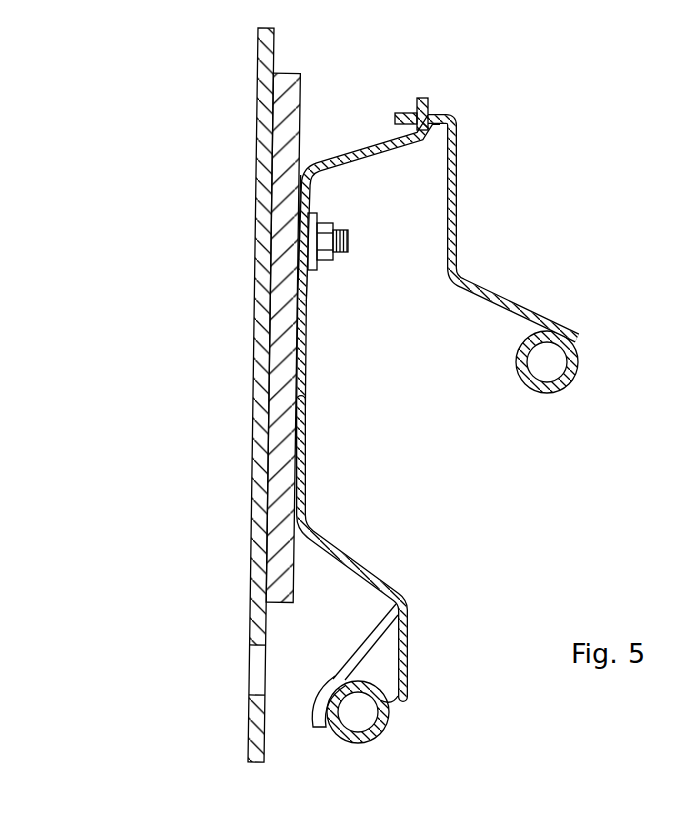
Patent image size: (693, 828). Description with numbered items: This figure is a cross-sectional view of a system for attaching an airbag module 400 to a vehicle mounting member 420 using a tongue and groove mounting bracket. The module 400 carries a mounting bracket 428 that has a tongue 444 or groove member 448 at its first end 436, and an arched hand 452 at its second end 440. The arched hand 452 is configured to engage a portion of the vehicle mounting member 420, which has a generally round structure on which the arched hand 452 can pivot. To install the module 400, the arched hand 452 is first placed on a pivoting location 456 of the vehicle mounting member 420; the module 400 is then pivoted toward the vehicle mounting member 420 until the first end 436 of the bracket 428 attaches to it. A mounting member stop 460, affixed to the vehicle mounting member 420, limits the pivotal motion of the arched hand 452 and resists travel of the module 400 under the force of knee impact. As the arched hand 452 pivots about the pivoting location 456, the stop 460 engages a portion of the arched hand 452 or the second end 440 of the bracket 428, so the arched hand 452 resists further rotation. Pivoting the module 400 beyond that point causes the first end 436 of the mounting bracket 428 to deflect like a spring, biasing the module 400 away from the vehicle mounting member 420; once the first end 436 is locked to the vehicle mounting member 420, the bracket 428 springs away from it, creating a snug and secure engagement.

The module 400 is at (188, 119).
The vehicle mounting member 420 is at (549, 317).
The mounting bracket 428 is at (307, 441).
The first end 436 is at (362, 135).
The second end 440 is at (411, 682).
The tongue 444 is at (425, 99).
The groove member 448 is at (438, 118).
The arched hand 452 is at (333, 692).
The pivoting location 456 is at (391, 708).
The mounting member stop 460 is at (363, 643).